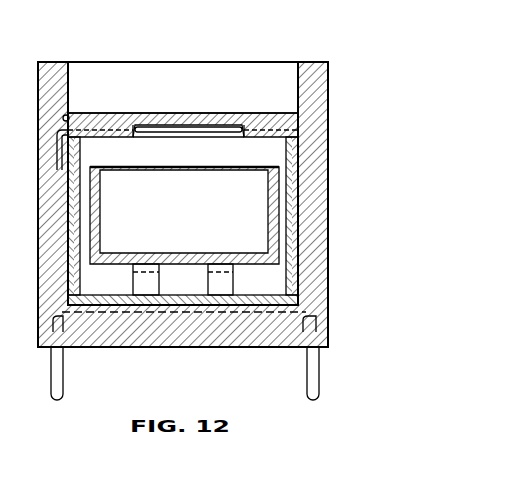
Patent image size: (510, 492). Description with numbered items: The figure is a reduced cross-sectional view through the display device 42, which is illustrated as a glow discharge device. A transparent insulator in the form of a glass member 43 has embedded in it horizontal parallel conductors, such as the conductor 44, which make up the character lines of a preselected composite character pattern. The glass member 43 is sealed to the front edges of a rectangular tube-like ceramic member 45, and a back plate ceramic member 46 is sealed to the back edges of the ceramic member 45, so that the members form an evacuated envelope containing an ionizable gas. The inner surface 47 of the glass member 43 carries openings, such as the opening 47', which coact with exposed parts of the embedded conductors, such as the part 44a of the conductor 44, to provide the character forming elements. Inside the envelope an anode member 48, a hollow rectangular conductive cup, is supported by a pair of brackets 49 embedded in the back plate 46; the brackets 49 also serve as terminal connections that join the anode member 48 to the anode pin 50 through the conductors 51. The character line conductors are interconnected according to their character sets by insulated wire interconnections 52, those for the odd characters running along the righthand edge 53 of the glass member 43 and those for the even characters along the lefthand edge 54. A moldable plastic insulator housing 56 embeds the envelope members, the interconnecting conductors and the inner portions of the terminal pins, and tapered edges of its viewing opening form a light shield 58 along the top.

The display device 42 is at (104, 54).
The glass member 43 is at (235, 113).
The conductor 44 is at (107, 128).
The exposed part of embedded conductor 44a is at (244, 143).
The ceramic member 45 is at (80, 159).
The back plate ceramic member 46 is at (242, 297).
The inner surface 47 is at (124, 143).
The opening 47' is at (254, 143).
The anode member 48 is at (278, 190).
The brackets 49 is at (160, 283).
The anode pin 50 is at (64, 378).
The conductors 51 is at (243, 332).
The interconnections 52 is at (59, 172).
The righthand edge 53 is at (303, 124).
The lefthand edge 54 is at (67, 114).
The plastic insulator housing 56 is at (324, 282).
The light shield 58 is at (268, 70).